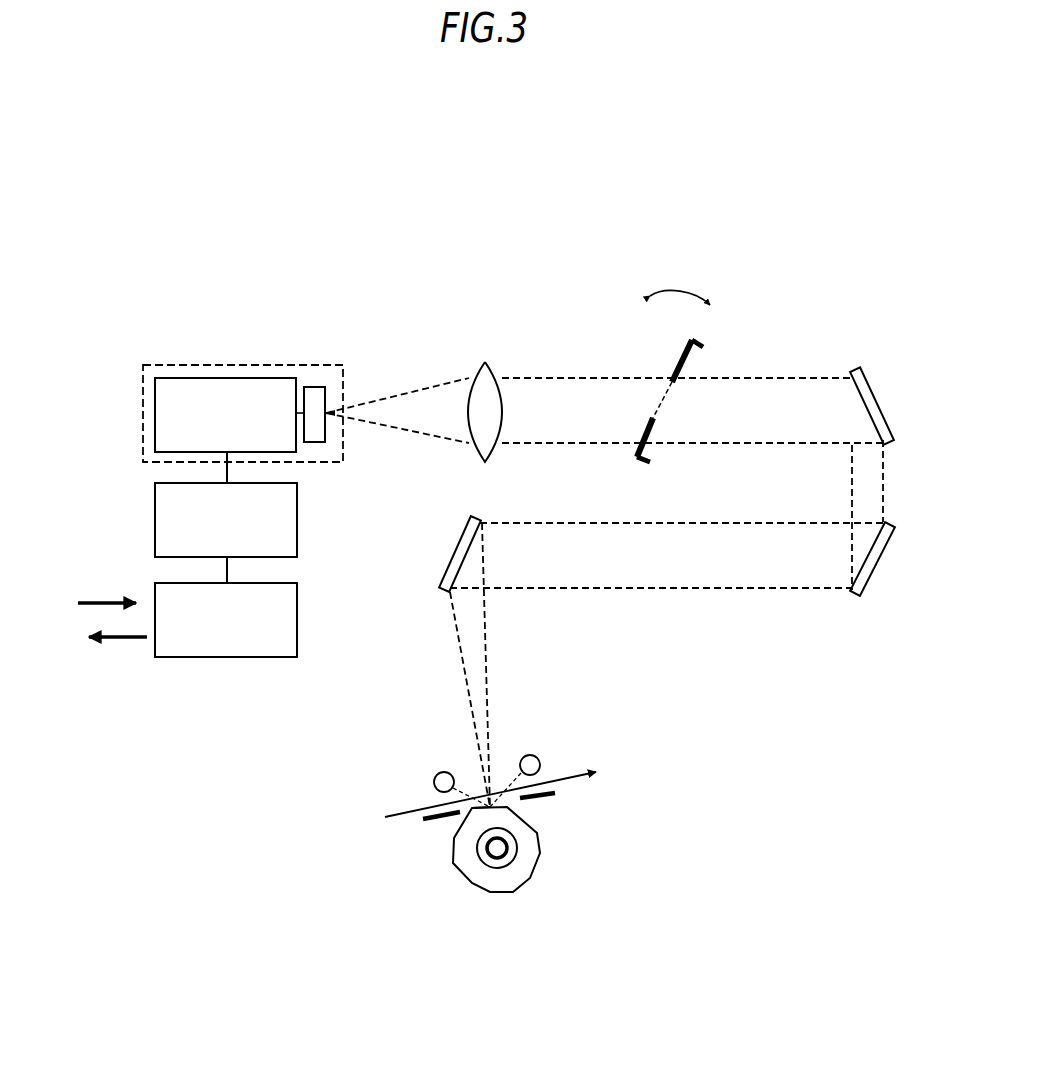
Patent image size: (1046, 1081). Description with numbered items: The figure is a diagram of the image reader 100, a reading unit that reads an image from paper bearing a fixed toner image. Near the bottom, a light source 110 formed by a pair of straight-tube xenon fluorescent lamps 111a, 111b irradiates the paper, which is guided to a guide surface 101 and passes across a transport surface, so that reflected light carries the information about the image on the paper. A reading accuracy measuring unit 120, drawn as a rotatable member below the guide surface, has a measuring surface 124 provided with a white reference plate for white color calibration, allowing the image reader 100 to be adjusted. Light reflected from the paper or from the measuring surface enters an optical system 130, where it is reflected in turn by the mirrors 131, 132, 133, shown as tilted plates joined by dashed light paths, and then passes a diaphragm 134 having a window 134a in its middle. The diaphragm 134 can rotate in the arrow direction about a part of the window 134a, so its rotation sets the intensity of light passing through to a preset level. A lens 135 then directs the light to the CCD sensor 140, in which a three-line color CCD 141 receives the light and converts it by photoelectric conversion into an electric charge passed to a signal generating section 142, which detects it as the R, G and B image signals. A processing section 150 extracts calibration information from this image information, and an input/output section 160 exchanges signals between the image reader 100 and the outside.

The image reader 100 is at (593, 272).
The guide surface 101 is at (560, 798).
The light source 110 is at (436, 710).
The xenon fluorescent lamp 111a is at (437, 775).
The xenon fluorescent lamp 111b is at (540, 758).
The reading accuracy measuring unit 120 is at (540, 865).
The measuring surface 124 is at (460, 813).
The optical system 130 is at (720, 612).
The mirror 131 is at (455, 535).
The mirror 132 is at (855, 598).
The mirror 133 is at (853, 368).
The diaphragm 134 is at (700, 340).
The window 134a is at (668, 398).
The lens 135 is at (487, 362).
The CCD sensor 140 is at (188, 365).
The CCD 141 is at (318, 387).
The signal generating section 142 is at (245, 378).
The processing section 150 is at (155, 513).
The input/output section 160 is at (206, 658).